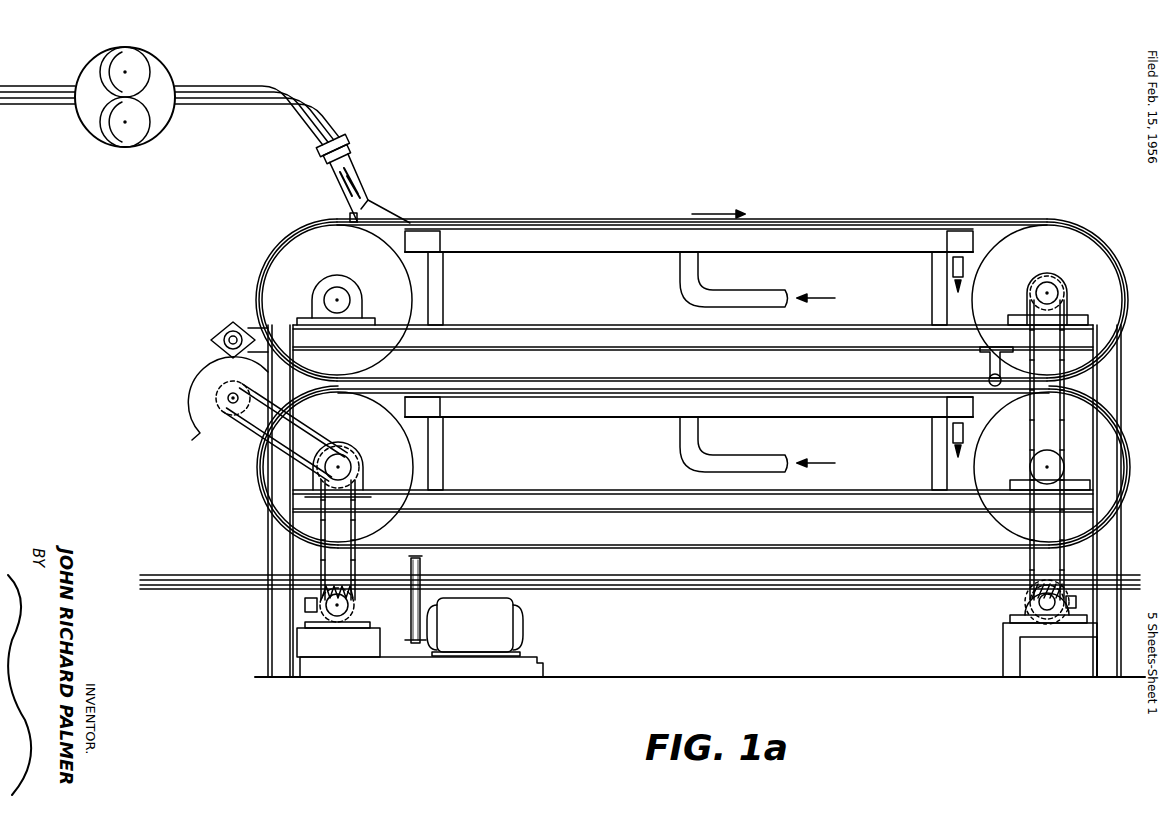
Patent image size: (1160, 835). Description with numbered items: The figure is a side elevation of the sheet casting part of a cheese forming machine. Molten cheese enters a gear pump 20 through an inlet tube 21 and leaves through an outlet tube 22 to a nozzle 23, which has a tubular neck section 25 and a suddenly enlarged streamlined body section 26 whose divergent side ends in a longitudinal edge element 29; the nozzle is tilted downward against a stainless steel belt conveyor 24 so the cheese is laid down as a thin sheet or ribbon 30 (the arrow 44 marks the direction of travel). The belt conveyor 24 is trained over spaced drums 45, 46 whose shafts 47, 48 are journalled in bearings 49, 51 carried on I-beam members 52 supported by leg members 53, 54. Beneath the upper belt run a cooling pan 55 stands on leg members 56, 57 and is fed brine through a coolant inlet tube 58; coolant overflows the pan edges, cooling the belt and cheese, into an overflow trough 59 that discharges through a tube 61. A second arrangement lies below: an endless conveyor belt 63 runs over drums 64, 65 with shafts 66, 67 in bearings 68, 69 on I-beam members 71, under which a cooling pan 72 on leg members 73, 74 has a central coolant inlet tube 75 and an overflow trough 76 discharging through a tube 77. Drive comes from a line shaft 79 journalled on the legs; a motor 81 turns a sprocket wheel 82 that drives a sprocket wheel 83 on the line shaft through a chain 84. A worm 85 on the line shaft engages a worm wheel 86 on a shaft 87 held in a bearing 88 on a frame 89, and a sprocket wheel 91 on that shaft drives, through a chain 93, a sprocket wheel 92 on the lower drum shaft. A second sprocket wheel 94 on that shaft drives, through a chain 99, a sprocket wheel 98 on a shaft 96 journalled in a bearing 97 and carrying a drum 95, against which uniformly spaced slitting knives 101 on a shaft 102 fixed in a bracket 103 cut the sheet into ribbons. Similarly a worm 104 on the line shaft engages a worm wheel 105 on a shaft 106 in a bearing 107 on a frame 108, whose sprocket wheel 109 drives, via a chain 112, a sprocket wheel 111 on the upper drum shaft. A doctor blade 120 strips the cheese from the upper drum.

The gear pump 20 is at (158, 67).
The inlet tube 21 is at (10, 88).
The outlet tube 22 is at (307, 78).
The nozzle 23 is at (356, 172).
The belt conveyor 24 is at (354, 222).
The tubular neck section 25 is at (352, 149).
The streamlined body section 26 is at (362, 192).
The longitudinal edge element 29 is at (396, 224).
The sheet or ribbon 30 is at (505, 222).
The direction of belt travel 44 is at (700, 214).
The drum 45 is at (290, 261).
The drum 46 is at (1097, 259).
The shaft 47 is at (337, 301).
The shaft 48 is at (1045, 291).
The bearing 49 is at (364, 318).
The bearing 51 is at (1078, 318).
The I-beam member 52 is at (548, 330).
The leg member 53 is at (268, 541).
The leg member 54 is at (1108, 546).
The cooling pan 55 is at (600, 248).
The leg member 56 is at (436, 296).
The leg member 57 is at (935, 292).
The coolant inlet tube 58 is at (730, 299).
The overflow trough 59 is at (424, 236).
The tube 61 is at (950, 267).
The endless conveyor belt 63 is at (264, 487).
The drum 64 is at (381, 430).
The drum 65 is at (1080, 430).
The shaft 66 is at (343, 465).
The shaft 67 is at (1045, 460).
The bearing 68 is at (364, 478).
The bearing 69 is at (1017, 482).
The I-beam member 71 is at (538, 496).
The cooling pan 72 is at (600, 412).
The leg member 73 is at (440, 466).
The leg member 74 is at (935, 456).
The coolant inlet tube 75 is at (745, 464).
The overflow trough 76 is at (440, 409).
The tube 77 is at (950, 433).
The line shaft 79 is at (517, 587).
The motor 81 is at (490, 610).
The sprocket wheel 82 is at (412, 641).
The sprocket wheel 83 is at (422, 573).
The chain 84 is at (418, 560).
The worm 85 is at (328, 583).
The worm wheel 86 is at (323, 603).
The shaft 87 is at (354, 613).
The bearing 88 is at (365, 628).
The frame 89 is at (366, 650).
The sprocket wheel 91 is at (358, 603).
The sprocket wheel 92 is at (358, 493).
The chain 93 is at (358, 553).
The second sprocket wheel 94 is at (324, 440).
The drum 95 is at (226, 433).
The shaft 96 is at (226, 399).
The bearing 97 is at (268, 385).
The sprocket wheel 98 is at (236, 409).
The chain 99 is at (262, 448).
The slitting knives 101 is at (215, 348).
The shaft 102 is at (222, 334).
The bracket 103 is at (252, 332).
The worm 104 is at (1045, 585).
The worm wheel 105 is at (1081, 604).
The shaft 106 is at (1028, 612).
The bearing 107 is at (1085, 623).
The frame 108 is at (1015, 664).
The sprocket wheel 109 is at (1028, 600).
The sprocket wheel 111 is at (1028, 304).
The chain 112 is at (1062, 411).
The scraper or doctor blade 120 is at (990, 367).